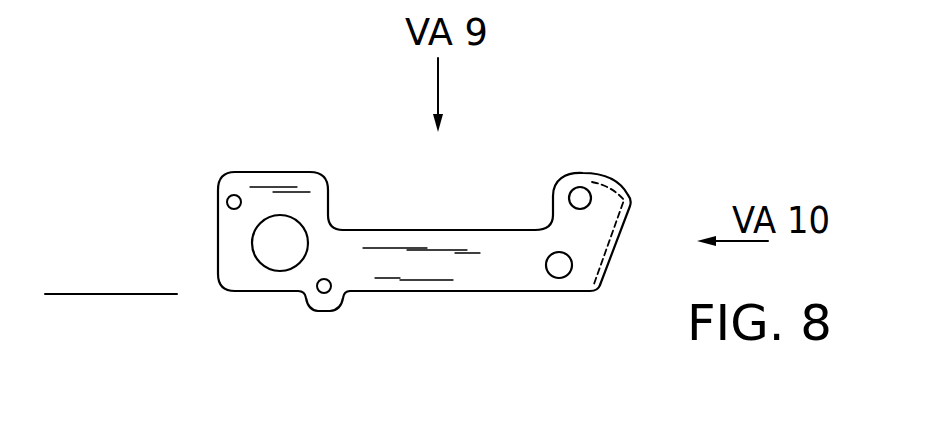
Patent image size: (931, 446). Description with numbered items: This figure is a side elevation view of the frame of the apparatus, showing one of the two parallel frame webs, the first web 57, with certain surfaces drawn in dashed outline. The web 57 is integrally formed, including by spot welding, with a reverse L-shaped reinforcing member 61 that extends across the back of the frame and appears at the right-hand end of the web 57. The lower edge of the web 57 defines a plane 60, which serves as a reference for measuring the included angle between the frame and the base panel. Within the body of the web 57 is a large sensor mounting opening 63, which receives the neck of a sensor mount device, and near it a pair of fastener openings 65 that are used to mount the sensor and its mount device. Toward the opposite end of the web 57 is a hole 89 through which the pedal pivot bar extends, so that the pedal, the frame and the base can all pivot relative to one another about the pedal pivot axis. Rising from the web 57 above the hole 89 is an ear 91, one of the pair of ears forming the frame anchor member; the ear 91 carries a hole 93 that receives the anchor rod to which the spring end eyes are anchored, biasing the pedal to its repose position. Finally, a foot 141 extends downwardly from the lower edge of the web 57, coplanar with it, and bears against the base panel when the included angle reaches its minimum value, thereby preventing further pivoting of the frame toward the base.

The first web 57 is at (490, 291).
The plane 60 is at (101, 294).
The reinforcing member 61 is at (628, 196).
The sensor mounting opening 63 is at (260, 265).
The fastener openings 65 is at (227, 196).
The hole 89 is at (559, 278).
The ear 91 is at (560, 186).
The hole 93 is at (581, 192).
The foot 141 is at (318, 313).